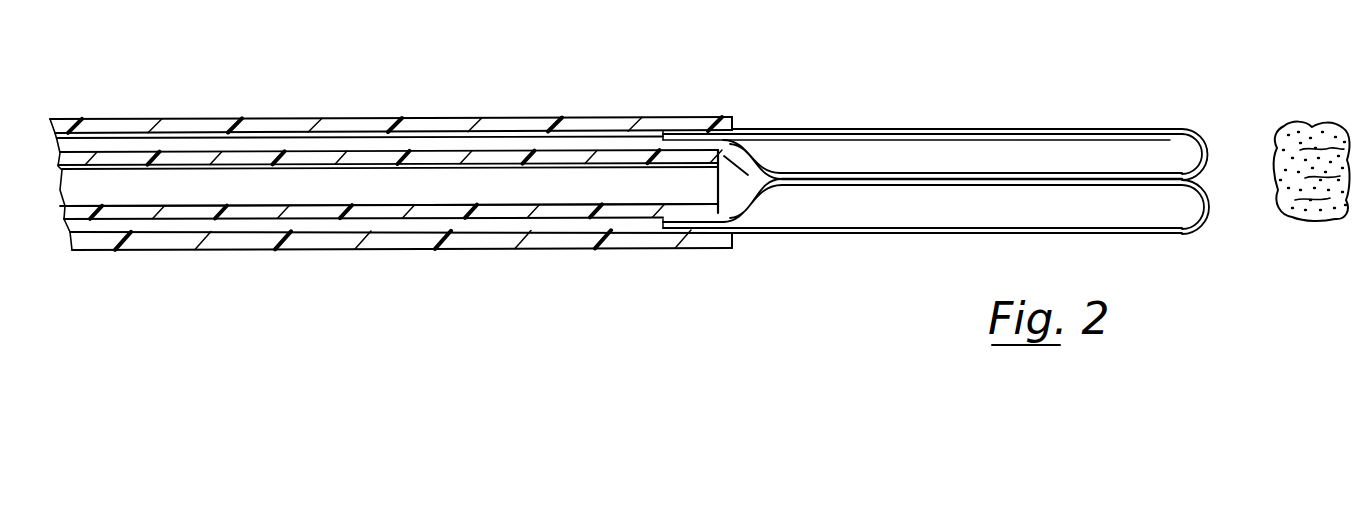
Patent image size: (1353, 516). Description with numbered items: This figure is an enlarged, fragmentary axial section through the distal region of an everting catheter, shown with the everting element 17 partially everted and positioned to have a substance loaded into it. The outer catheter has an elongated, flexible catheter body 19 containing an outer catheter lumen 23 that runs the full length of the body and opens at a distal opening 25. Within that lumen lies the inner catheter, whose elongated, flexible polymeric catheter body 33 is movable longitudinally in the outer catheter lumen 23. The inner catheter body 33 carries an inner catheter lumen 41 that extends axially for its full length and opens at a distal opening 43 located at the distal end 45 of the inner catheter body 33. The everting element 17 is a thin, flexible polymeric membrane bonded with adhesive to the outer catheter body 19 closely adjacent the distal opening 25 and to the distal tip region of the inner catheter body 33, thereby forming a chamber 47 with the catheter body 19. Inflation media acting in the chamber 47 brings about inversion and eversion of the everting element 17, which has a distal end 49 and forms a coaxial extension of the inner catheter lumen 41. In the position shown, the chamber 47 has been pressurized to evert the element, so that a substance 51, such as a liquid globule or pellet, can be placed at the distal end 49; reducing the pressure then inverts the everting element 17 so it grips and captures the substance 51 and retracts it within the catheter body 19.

The everting element 17 is at (1040, 128).
The catheter body 19 is at (167, 118).
The outer catheter lumen 23 is at (272, 143).
The distal opening 25 is at (732, 128).
The catheter body 33 is at (168, 213).
The inner catheter lumen 41 is at (252, 185).
The distal opening 43 is at (715, 190).
The distal end 45 is at (718, 205).
The chamber 47 is at (928, 157).
The distal end 49 is at (1208, 157).
The substance 51 is at (1310, 220).